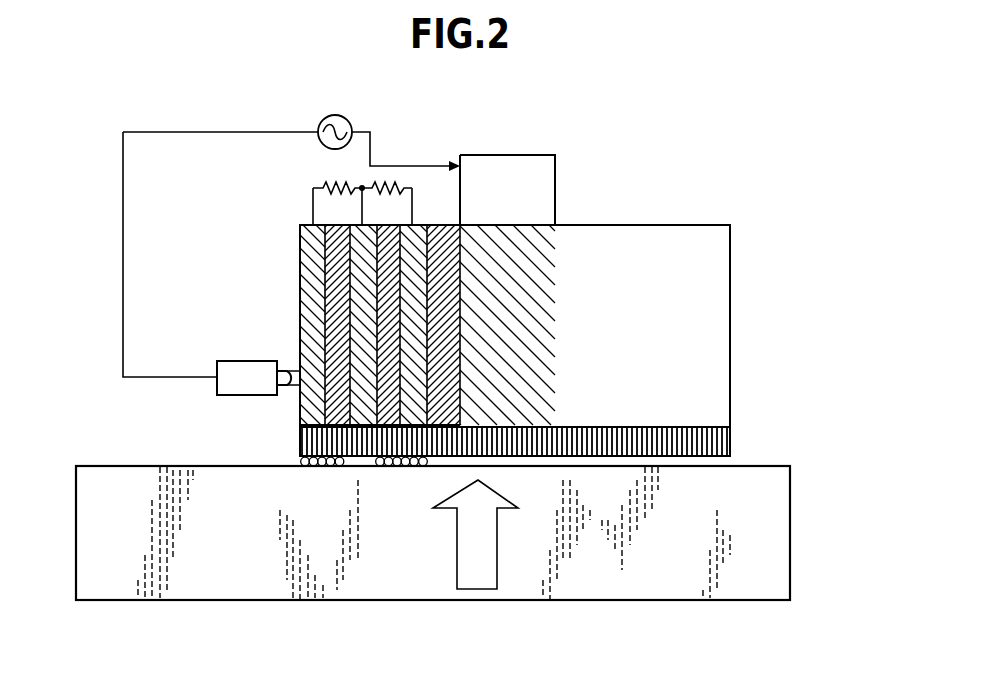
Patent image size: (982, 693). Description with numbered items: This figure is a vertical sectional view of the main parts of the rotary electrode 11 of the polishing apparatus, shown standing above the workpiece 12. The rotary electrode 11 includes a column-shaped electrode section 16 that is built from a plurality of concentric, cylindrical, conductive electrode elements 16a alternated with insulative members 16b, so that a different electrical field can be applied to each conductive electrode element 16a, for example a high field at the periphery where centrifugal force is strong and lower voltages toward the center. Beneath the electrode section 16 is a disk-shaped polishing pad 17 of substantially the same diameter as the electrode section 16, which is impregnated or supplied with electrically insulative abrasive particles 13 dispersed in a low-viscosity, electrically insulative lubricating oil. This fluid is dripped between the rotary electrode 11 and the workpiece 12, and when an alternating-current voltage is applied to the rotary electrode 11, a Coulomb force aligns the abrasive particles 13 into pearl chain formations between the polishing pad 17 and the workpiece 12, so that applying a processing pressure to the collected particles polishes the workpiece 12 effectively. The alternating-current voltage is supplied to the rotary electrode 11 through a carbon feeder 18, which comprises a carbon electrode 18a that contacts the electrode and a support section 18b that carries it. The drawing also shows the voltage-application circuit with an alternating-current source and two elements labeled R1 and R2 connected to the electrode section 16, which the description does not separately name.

The rotary electrode 11 is at (623, 214).
The workpiece 12 is at (166, 599).
The abrasive particles 13 is at (300, 460).
The electrode section 16 is at (292, 337).
The conductive electrode element 16a is at (308, 263).
The insulative member 16b is at (336, 240).
The polishing pad 17 is at (727, 446).
The carbon feeder 18 is at (146, 383).
The carbon electrode 18a is at (284, 392).
The support section 18b is at (217, 386).
The resistor R1 is at (337, 173).
The resistor R2 is at (387, 205).